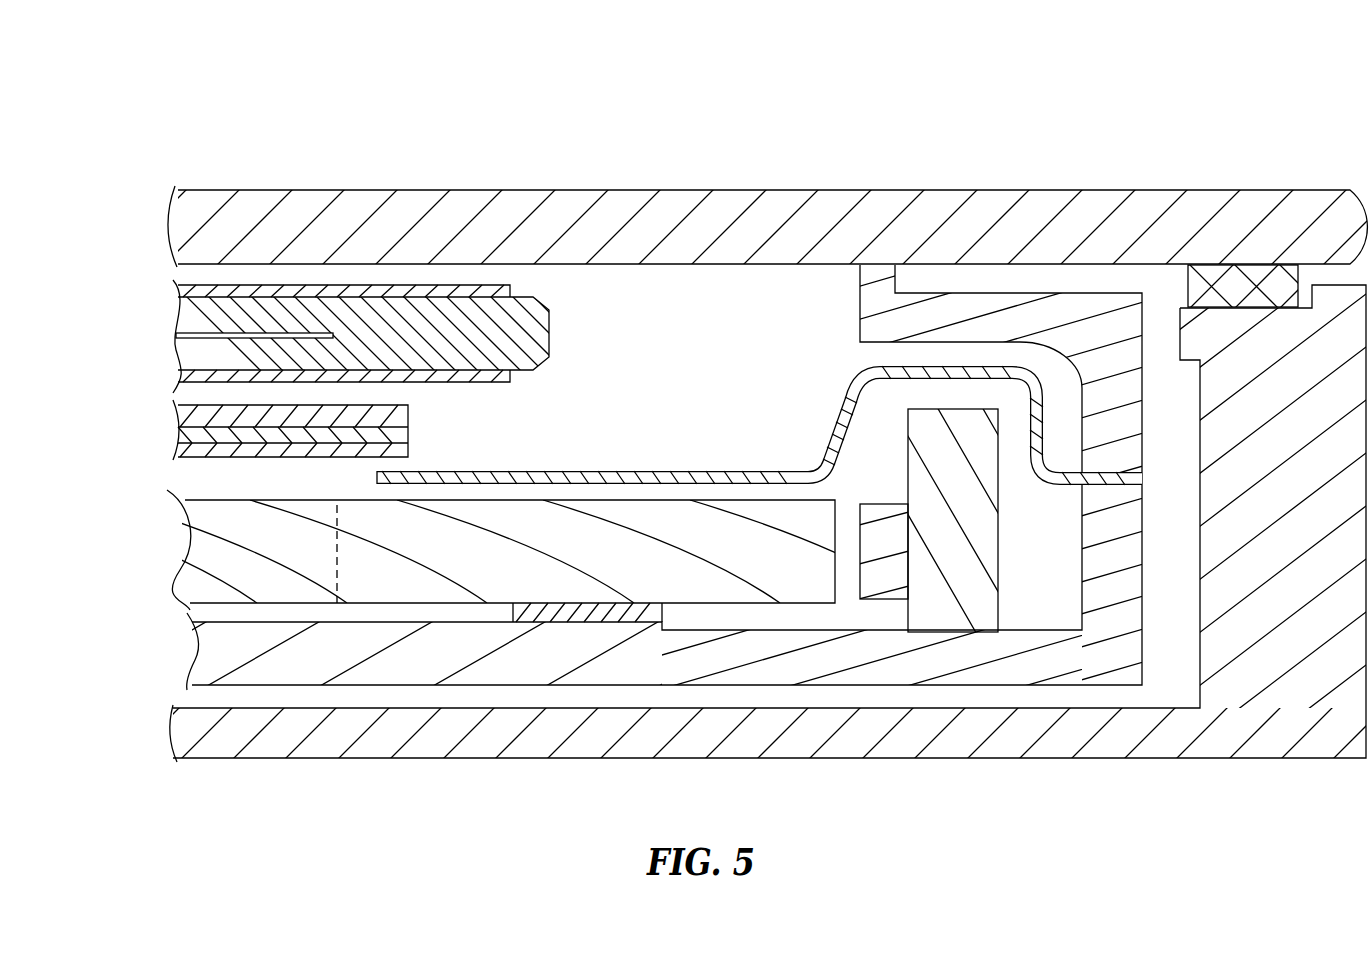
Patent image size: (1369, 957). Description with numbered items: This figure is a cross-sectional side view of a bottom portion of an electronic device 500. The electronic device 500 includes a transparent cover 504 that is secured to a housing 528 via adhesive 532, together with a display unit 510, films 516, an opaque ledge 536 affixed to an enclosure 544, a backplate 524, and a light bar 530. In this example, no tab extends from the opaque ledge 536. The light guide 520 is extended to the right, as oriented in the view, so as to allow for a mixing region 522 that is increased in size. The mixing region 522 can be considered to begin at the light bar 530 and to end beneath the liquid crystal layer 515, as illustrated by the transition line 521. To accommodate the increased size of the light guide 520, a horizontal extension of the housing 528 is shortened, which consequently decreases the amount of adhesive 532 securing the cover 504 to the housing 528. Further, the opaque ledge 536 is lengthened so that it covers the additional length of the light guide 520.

The electronic device 500 is at (993, 92).
The transparent cover 504 is at (758, 188).
The display unit 510 is at (112, 275).
The liquid crystal layer 515 is at (207, 330).
The films 516 is at (165, 433).
The light guide 520 is at (195, 535).
The transition line 521 is at (326, 534).
The mixing region 522 is at (562, 571).
The backplate 524 is at (205, 672).
The housing 528 is at (1308, 715).
The light bar 530 is at (873, 577).
The adhesive 532 is at (1230, 293).
The opaque ledge 536 is at (848, 392).
The enclosure 544 is at (1113, 643).